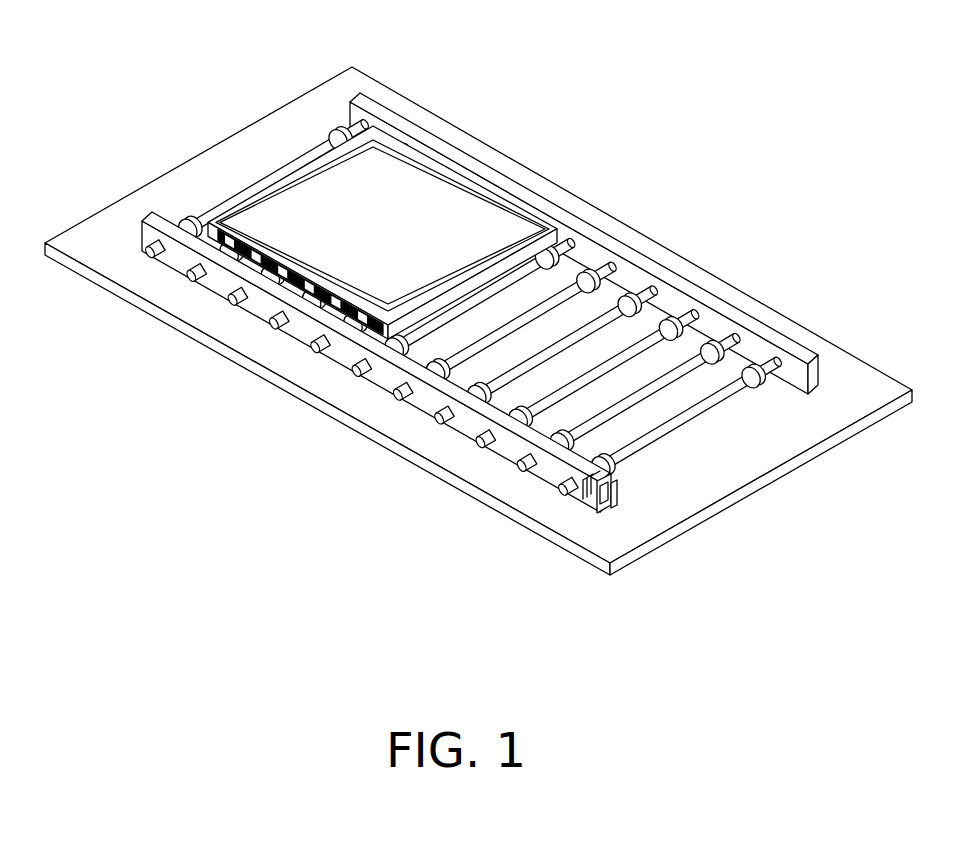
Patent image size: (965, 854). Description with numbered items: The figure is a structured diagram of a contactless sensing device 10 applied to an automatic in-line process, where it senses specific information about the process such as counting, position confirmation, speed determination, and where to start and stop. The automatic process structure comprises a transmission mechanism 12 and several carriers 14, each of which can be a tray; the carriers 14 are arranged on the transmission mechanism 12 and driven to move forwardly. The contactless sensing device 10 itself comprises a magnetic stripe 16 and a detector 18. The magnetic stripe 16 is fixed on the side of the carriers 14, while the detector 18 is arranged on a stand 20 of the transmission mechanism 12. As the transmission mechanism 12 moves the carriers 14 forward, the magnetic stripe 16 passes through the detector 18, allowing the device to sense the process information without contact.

The contactless sensing device 10 is at (491, 339).
The transmission mechanism 12 is at (785, 435).
The carrier 14 is at (395, 222).
The magnetic stripe 16 is at (282, 281).
The detector 18 is at (572, 553).
The stand 20 is at (175, 258).